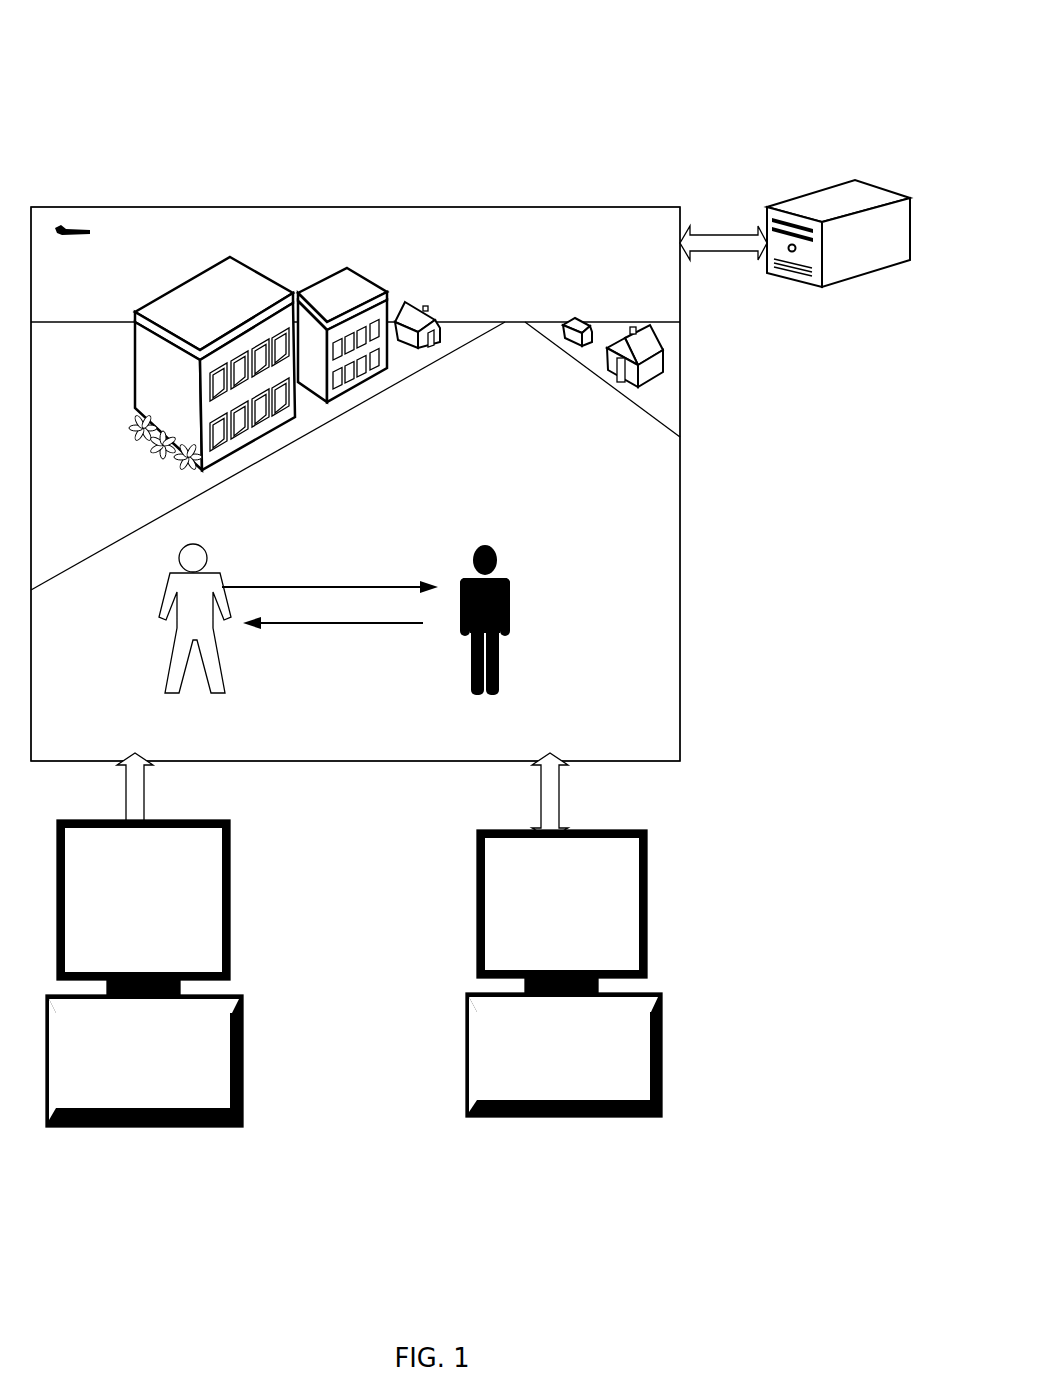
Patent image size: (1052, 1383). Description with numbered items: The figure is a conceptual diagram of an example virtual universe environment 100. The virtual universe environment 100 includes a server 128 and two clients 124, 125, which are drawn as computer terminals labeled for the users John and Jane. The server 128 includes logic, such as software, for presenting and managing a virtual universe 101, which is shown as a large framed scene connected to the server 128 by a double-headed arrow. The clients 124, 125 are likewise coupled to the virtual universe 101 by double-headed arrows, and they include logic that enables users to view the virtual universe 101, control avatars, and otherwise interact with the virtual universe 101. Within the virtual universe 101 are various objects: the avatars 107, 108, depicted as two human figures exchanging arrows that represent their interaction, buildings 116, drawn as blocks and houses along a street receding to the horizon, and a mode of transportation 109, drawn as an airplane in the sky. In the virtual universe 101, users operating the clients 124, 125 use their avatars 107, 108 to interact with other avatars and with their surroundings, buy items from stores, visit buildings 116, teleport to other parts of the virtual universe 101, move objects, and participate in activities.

The virtual universe environment 100 is at (103, 9).
The virtual universe 101 is at (216, 207).
The mode of transportation 109 is at (92, 232).
The building 116 is at (212, 283).
The avatar 108 is at (220, 657).
The avatar 107 is at (510, 640).
The client 124 is at (230, 893).
The client 125 is at (647, 893).
The server 128 is at (817, 186).